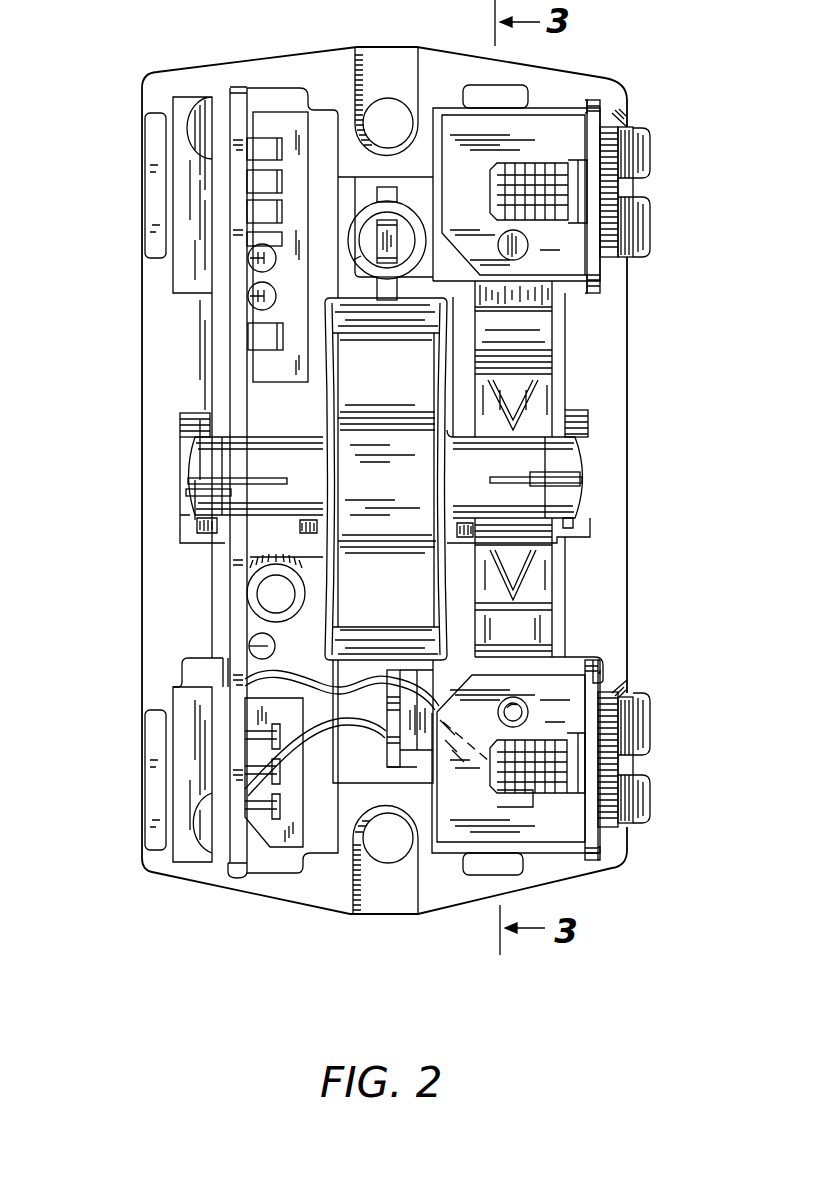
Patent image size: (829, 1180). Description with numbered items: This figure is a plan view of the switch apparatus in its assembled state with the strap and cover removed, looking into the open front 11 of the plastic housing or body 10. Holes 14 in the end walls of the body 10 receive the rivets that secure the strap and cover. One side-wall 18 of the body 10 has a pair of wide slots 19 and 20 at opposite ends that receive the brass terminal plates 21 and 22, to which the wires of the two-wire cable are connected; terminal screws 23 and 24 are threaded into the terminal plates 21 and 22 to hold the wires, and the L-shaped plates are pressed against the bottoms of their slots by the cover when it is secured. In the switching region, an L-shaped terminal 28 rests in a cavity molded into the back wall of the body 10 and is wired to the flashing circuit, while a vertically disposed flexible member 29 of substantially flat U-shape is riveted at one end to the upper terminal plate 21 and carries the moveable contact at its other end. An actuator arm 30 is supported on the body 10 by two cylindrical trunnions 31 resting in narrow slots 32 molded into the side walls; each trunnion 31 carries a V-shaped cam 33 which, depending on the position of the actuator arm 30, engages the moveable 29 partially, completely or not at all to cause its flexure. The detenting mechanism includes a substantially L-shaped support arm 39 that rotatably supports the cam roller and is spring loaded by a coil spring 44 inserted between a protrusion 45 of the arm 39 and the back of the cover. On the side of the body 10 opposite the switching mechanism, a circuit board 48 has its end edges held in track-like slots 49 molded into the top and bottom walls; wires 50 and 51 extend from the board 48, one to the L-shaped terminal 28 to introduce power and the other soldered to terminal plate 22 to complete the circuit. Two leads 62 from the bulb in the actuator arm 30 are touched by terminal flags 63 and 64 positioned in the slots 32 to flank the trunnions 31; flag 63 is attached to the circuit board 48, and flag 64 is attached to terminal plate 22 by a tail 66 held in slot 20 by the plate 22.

The housing or body 10 is at (275, 67).
The open front 11 is at (325, 117).
The holes 14 is at (390, 110).
The side-wall 18 is at (620, 358).
The wide slot 19 is at (628, 125).
The wide slot 20 is at (607, 817).
The terminal plate 21 is at (598, 272).
The terminal plate 22 is at (593, 838).
The terminal screw 23 is at (650, 213).
The terminal screw 24 is at (650, 730).
The L-shaped terminal 28 is at (388, 753).
The flexible member 29 is at (538, 610).
The actuator arm 30 is at (386, 479).
The trunnions 31 is at (200, 462).
The narrow slots 32 is at (183, 425).
The cam 33 is at (460, 530).
The support arm 39 is at (388, 197).
The coil spring 44 is at (410, 232).
The protrusion 45 is at (387, 247).
The circuit board 48 is at (213, 302).
The track like slots 49 is at (233, 88).
The wire 50 is at (317, 753).
The wire 51 is at (302, 675).
The leads 62 is at (200, 480).
The terminal flag 63 is at (190, 494).
The terminal flag 64 is at (585, 497).
The tail 66 is at (600, 672).